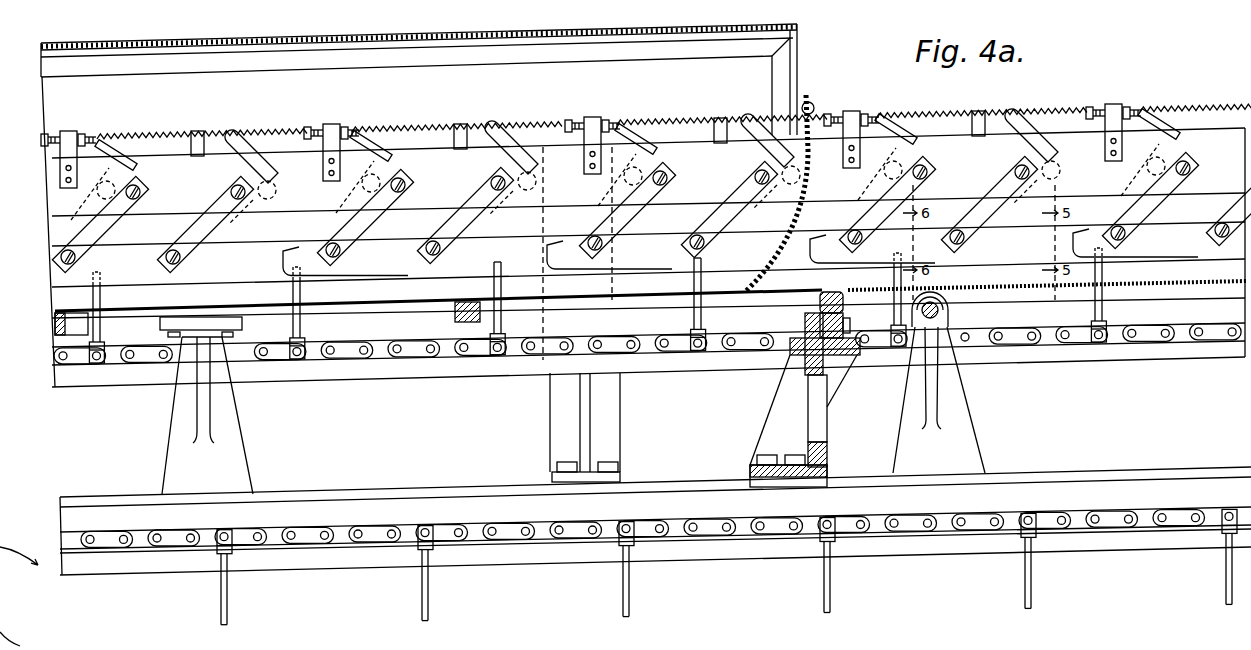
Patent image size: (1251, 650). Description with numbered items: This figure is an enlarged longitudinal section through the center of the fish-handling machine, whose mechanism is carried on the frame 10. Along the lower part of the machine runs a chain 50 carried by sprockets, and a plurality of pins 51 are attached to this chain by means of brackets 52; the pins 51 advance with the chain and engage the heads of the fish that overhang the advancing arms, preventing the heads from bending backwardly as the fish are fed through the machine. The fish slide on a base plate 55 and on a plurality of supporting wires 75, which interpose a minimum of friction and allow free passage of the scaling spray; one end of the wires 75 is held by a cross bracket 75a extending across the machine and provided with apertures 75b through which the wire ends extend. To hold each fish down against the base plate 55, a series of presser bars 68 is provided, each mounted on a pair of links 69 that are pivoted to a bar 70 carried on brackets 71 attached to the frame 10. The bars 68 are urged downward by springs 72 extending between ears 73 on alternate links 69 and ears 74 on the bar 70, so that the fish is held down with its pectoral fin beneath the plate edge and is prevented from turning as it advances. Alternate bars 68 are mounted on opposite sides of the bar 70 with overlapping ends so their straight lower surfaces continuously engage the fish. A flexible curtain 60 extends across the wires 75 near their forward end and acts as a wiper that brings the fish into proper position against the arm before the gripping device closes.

The frame 10 is at (520, 560).
The chain 50 is at (716, 344).
The pins 51 is at (301, 321).
The brackets 52 is at (297, 362).
The base plate 55 is at (1222, 291).
The curtain 60 is at (795, 238).
The presser bars 68 is at (137, 280).
The links 69 is at (126, 224).
The bar 70 is at (1213, 214).
The brackets 71 is at (608, 284).
The springs 72 is at (674, 122).
The ears 73 is at (234, 130).
The ears 74 is at (69, 132).
The supporting wires 75 is at (397, 308).
The cross bracket 75a is at (843, 366).
The apertures 75b is at (845, 312).